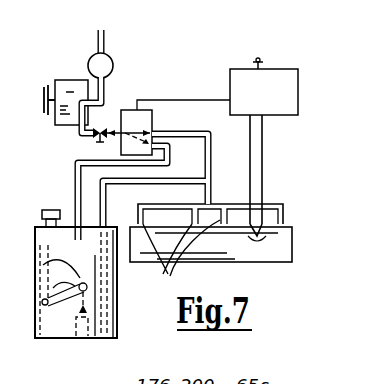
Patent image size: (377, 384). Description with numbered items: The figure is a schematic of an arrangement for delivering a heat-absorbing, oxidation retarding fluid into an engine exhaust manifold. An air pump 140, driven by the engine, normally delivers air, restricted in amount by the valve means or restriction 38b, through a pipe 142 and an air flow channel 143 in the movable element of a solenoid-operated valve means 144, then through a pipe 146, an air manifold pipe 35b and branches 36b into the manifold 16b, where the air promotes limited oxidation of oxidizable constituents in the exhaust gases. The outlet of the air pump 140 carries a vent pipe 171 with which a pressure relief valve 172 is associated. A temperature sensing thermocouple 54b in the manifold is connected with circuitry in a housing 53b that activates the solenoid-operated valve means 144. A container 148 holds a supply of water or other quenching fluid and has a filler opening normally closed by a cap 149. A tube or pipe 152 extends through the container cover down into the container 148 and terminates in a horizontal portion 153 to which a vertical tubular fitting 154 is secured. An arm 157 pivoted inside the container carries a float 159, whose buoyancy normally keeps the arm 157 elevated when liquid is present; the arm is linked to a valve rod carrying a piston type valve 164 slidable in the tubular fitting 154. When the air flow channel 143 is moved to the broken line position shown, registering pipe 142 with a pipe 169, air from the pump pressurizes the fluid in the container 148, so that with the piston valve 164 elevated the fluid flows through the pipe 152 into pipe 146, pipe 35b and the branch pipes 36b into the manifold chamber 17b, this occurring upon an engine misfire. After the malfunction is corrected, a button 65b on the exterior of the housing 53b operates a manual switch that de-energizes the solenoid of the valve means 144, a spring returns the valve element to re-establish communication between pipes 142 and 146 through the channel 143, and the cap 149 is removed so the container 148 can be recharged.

The air pump 140 is at (69, 80).
The vent pipe 171 is at (106, 39).
The pressure relief valve 172 is at (111, 56).
The pipe 142 is at (78, 131).
The valve means or restriction 38b is at (97, 144).
The air flow channel 143 is at (133, 132).
The solenoid-operated valve means 144 is at (153, 110).
The housing 53b is at (231, 80).
The button 65b is at (257, 61).
The pipe 146 is at (250, 134).
The air manifold pipe 35b is at (252, 172).
The branches 36b is at (284, 213).
The temperature sensing means or thermocouple 54b is at (258, 241).
The manifold 16b is at (196, 263).
The manifold chamber 17b is at (233, 242).
The pipe 169 is at (76, 162).
The tube or pipe 152 is at (100, 190).
The cap 149 is at (43, 211).
The container 148 is at (117, 302).
The float 159 is at (44, 265).
The arm 157 is at (40, 315).
The piston type valve 164 is at (76, 322).
The vertical tubular fitting 154 is at (78, 330).
The horizontal portion 153 is at (86, 330).